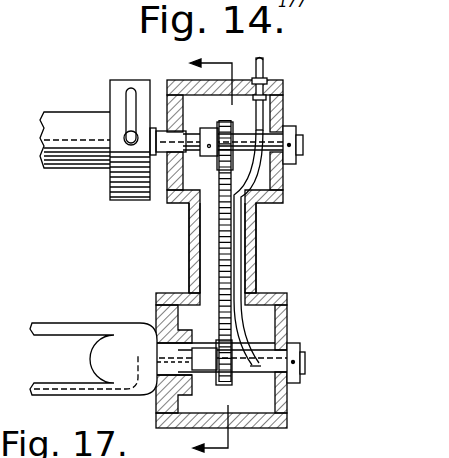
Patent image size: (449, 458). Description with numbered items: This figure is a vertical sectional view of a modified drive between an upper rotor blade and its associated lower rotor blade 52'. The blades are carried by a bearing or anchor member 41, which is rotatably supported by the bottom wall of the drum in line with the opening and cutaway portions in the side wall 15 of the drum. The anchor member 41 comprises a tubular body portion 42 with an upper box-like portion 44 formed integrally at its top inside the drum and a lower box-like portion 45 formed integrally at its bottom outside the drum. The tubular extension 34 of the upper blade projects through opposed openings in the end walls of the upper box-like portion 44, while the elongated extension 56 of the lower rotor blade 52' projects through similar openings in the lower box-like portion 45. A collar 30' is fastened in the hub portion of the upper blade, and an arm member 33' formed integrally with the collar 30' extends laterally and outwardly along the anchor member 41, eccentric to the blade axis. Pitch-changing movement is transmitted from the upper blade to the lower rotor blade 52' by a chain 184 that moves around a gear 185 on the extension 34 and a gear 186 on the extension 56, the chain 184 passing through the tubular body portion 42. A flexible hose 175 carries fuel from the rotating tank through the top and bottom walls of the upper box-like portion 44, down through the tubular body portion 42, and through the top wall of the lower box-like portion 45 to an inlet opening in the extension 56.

The side wall 15 is at (196, 256).
The flexible hose 175 is at (265, 73).
The arm member 33' is at (75, 123).
The gear 185 is at (208, 128).
The tubular extension 34 is at (301, 145).
The collar 30' is at (129, 142).
The upper box-like portion 44 is at (283, 200).
The chain 184 is at (219, 236).
The bearing or anchor member 41 is at (184, 264).
The tubular body portion 42 is at (256, 261).
The lower rotor blade 52' is at (93, 347).
The gear 186 is at (204, 377).
The extension 56 is at (238, 372).
The lower box-like portion 45 is at (287, 416).